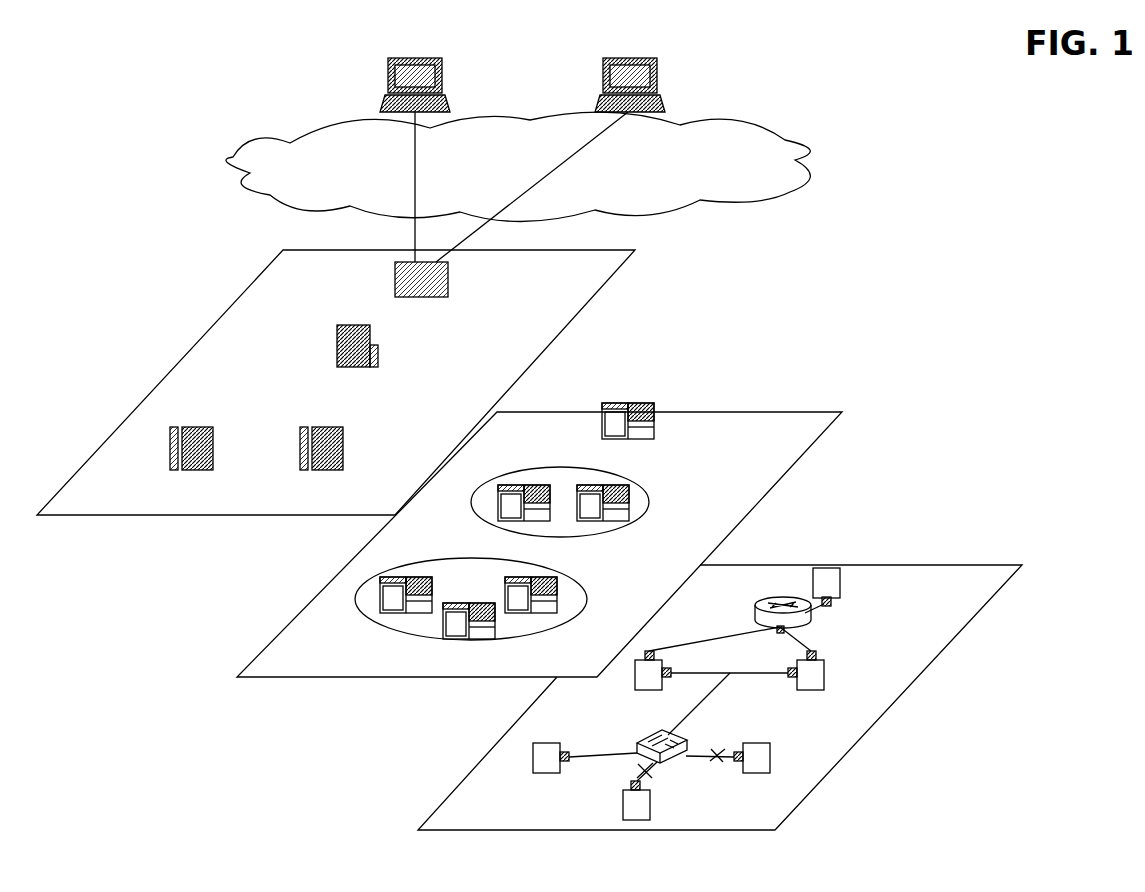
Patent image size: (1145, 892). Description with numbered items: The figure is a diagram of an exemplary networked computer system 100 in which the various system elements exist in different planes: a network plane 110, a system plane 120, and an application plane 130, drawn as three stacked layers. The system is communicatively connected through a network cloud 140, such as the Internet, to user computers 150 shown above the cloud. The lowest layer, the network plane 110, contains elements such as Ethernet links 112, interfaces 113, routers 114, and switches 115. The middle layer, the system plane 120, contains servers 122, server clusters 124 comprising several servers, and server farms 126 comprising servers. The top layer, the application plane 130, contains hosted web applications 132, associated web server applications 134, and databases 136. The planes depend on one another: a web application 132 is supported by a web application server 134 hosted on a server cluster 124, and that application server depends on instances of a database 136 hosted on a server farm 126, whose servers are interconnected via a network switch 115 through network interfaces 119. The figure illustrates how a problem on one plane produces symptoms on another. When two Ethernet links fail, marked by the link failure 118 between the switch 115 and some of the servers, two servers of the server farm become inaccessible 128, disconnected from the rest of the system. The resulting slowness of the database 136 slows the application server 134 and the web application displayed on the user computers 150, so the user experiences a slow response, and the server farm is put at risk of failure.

The networked computer system 100 is at (63, 87).
The network plane 110 is at (480, 833).
The Ethernet links 112 is at (598, 752).
The interfaces 113 is at (650, 652).
The routers 114 is at (805, 625).
The switches 115 is at (687, 738).
The link failure 118 is at (650, 770).
The network interfaces 119 is at (563, 772).
The system plane 120 is at (287, 678).
The servers 122 is at (653, 410).
The server clusters 124 is at (652, 500).
The server farms 126 is at (360, 644).
The inaccessible servers 128 is at (540, 613).
The application plane 130 is at (73, 517).
The hosted web applications 132 is at (393, 292).
The web server applications 134 is at (333, 347).
The databases 136 is at (323, 432).
The network cloud 140 is at (770, 180).
The user computers 150 is at (658, 68).